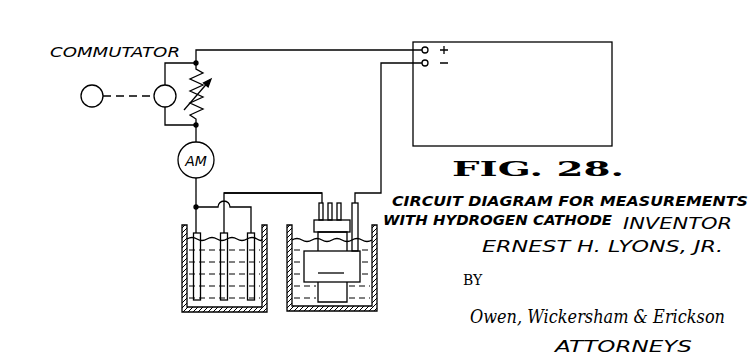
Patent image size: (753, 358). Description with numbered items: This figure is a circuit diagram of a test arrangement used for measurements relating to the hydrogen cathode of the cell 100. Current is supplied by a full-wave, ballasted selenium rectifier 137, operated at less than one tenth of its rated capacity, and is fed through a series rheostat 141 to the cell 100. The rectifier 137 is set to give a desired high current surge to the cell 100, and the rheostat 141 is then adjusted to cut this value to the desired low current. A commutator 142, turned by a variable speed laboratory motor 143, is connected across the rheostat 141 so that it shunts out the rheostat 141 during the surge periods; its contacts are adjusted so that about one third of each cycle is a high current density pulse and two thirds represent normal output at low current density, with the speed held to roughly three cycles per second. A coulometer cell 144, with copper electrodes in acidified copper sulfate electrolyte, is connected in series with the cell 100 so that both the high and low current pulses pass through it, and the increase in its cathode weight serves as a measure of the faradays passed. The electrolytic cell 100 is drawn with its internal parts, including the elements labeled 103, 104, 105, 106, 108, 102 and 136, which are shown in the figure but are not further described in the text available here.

The rectifier 137 is at (526, 49).
The rheostat 141 is at (203, 74).
The commutator 142 is at (164, 100).
The motor 143 is at (89, 110).
The coulometer cell 144 is at (182, 256).
The conductor 106 is at (284, 192).
The lead 104 is at (324, 199).
The lead 105 is at (339, 203).
The cathode 103 is at (317, 224).
The electrolyte 108 is at (374, 236).
The cell 100 is at (381, 267).
The anode 102 is at (372, 290).
The shield 136 is at (332, 266).